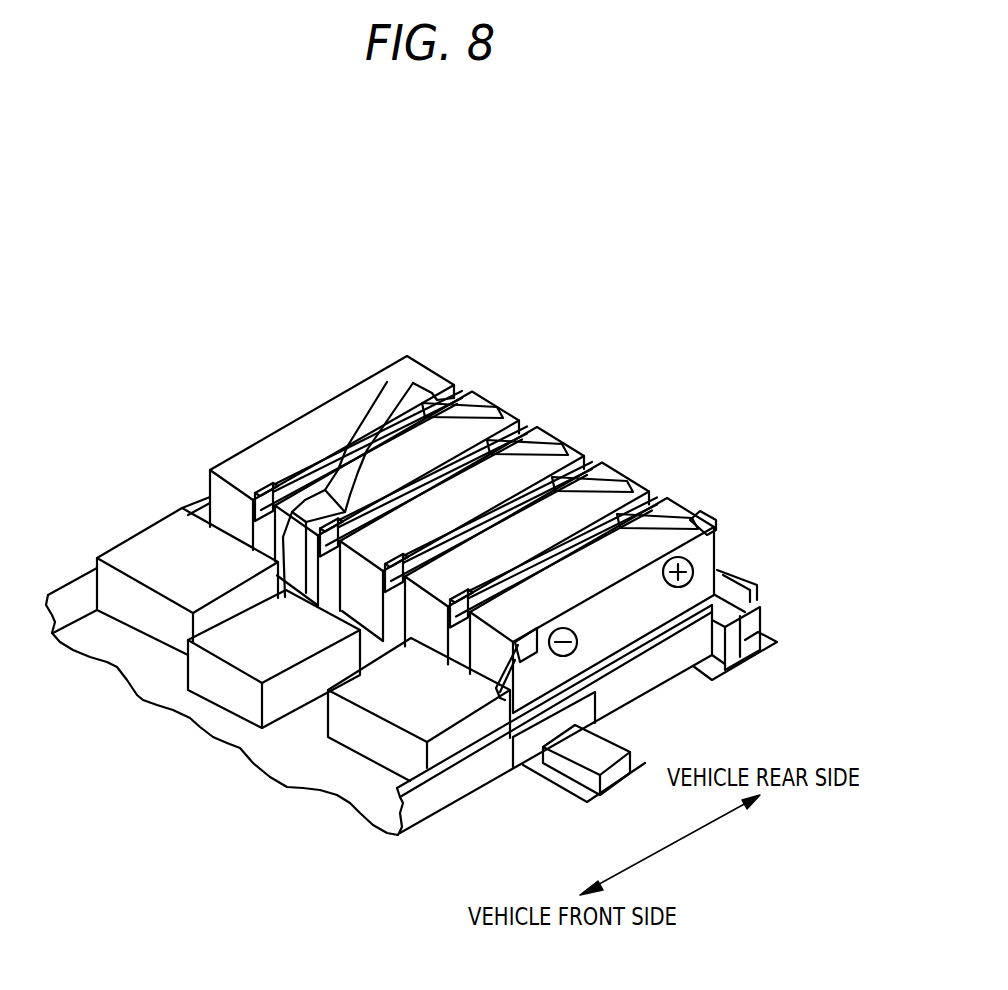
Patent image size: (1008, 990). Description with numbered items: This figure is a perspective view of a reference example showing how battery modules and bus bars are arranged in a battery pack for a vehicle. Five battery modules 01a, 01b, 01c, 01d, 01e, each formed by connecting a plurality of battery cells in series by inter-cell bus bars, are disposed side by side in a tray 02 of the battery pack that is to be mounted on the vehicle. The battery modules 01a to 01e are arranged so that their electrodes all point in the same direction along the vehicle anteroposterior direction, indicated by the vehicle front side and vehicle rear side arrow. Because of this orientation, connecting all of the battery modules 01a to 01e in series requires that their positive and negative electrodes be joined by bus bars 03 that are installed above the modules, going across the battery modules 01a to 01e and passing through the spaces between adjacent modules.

The battery module 01a is at (665, 501).
The battery module 01b is at (601, 465).
The battery module 01c is at (537, 430).
The battery module 01d is at (472, 394).
The battery module 01e is at (408, 358).
The tray 02 is at (655, 673).
The bus bar 03 is at (708, 516).